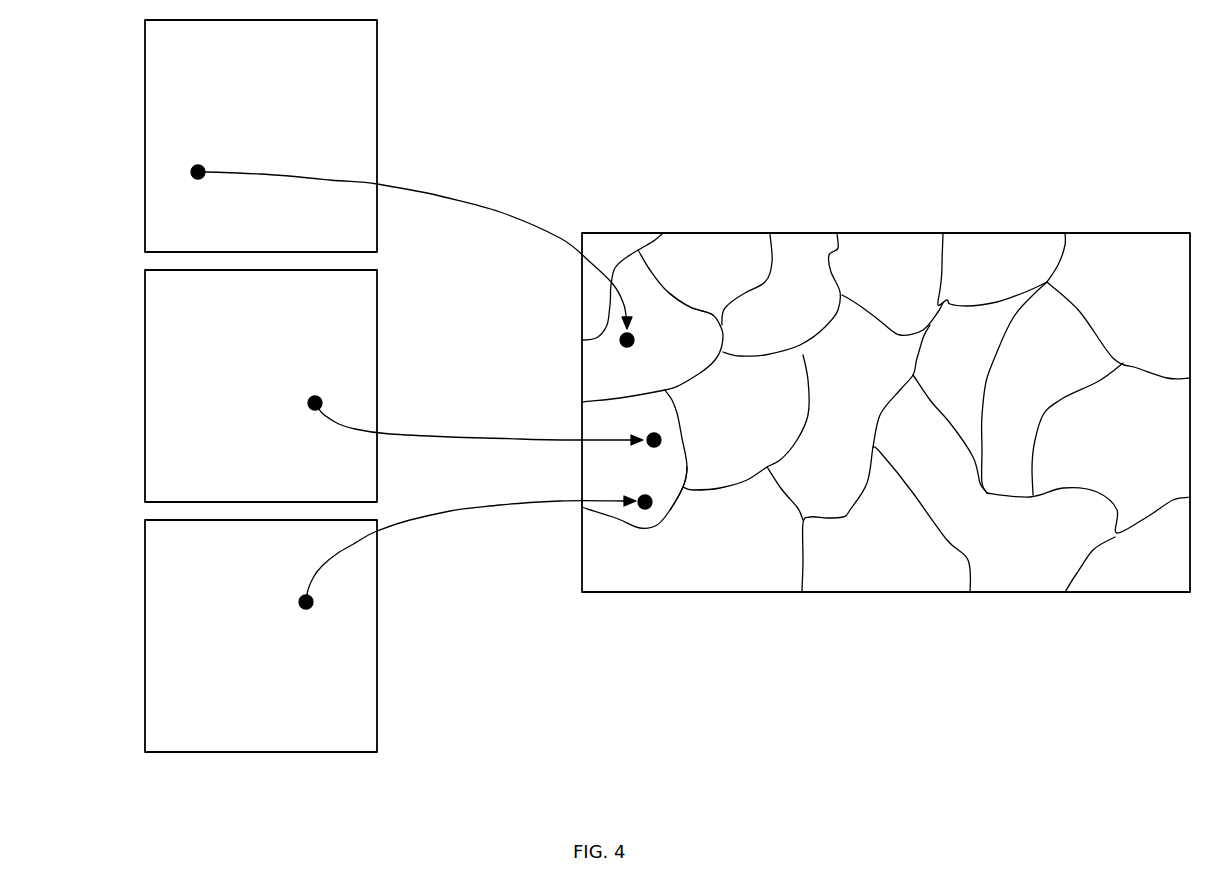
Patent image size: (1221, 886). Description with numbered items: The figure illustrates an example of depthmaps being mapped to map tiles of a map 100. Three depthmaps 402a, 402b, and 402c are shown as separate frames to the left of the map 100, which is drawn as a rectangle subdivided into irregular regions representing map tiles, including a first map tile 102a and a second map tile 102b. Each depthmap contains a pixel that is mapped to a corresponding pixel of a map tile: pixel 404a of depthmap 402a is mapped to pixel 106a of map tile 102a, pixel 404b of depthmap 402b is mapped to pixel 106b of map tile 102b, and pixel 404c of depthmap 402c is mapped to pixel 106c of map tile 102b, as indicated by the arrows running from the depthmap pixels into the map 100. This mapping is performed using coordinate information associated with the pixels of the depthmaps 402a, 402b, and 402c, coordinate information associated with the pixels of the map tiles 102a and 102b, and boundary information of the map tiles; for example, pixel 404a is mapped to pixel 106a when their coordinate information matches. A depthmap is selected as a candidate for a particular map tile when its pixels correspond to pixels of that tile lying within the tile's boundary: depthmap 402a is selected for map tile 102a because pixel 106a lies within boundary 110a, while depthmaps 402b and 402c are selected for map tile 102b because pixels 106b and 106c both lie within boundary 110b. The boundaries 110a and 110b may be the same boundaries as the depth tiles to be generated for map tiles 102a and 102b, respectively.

The map 100 is at (1113, 592).
The map tile 102a is at (626, 268).
The map tile 102b is at (667, 507).
The pixel of map tile 106a is at (630, 344).
The pixel of map tile 106b is at (662, 437).
The pixel of map tile 106c is at (645, 510).
The boundary 110a is at (697, 305).
The boundary 110b is at (685, 492).
The depthmap 402a is at (145, 218).
The depthmap 402b is at (145, 477).
The depthmap 402c is at (145, 720).
The pixel of depthmap 404a is at (199, 162).
The pixel of depthmap 404b is at (307, 394).
The pixel of depthmap 404c is at (300, 612).